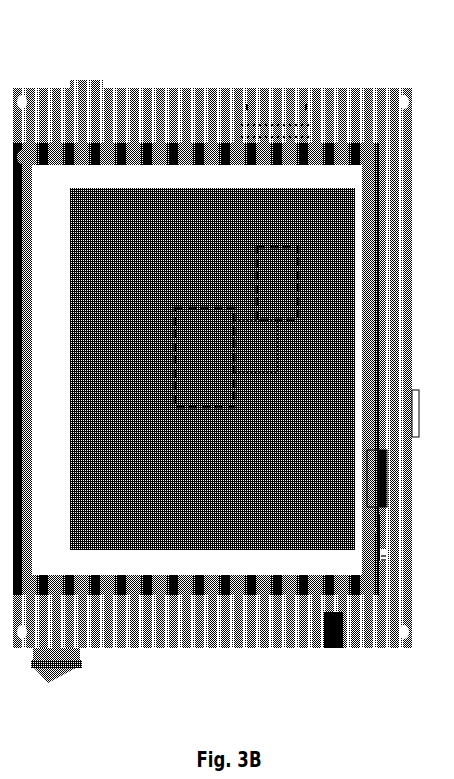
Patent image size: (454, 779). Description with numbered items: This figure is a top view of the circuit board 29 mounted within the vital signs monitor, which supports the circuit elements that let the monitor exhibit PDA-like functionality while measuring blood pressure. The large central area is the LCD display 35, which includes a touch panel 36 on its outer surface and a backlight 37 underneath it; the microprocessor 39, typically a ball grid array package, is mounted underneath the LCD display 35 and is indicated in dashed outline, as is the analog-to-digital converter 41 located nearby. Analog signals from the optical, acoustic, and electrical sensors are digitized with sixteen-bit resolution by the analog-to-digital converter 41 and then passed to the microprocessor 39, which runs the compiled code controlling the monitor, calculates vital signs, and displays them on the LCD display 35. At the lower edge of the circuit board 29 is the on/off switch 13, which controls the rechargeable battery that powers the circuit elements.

The circuit board 29 is at (42, 88).
The on/off switch 13 is at (73, 668).
The LCD display 35 is at (62, 220).
The touch panel 36 is at (130, 195).
The backlight 37 is at (277, 578).
The microprocessor 39 is at (200, 344).
The analog-to-digital converter 41 is at (281, 281).